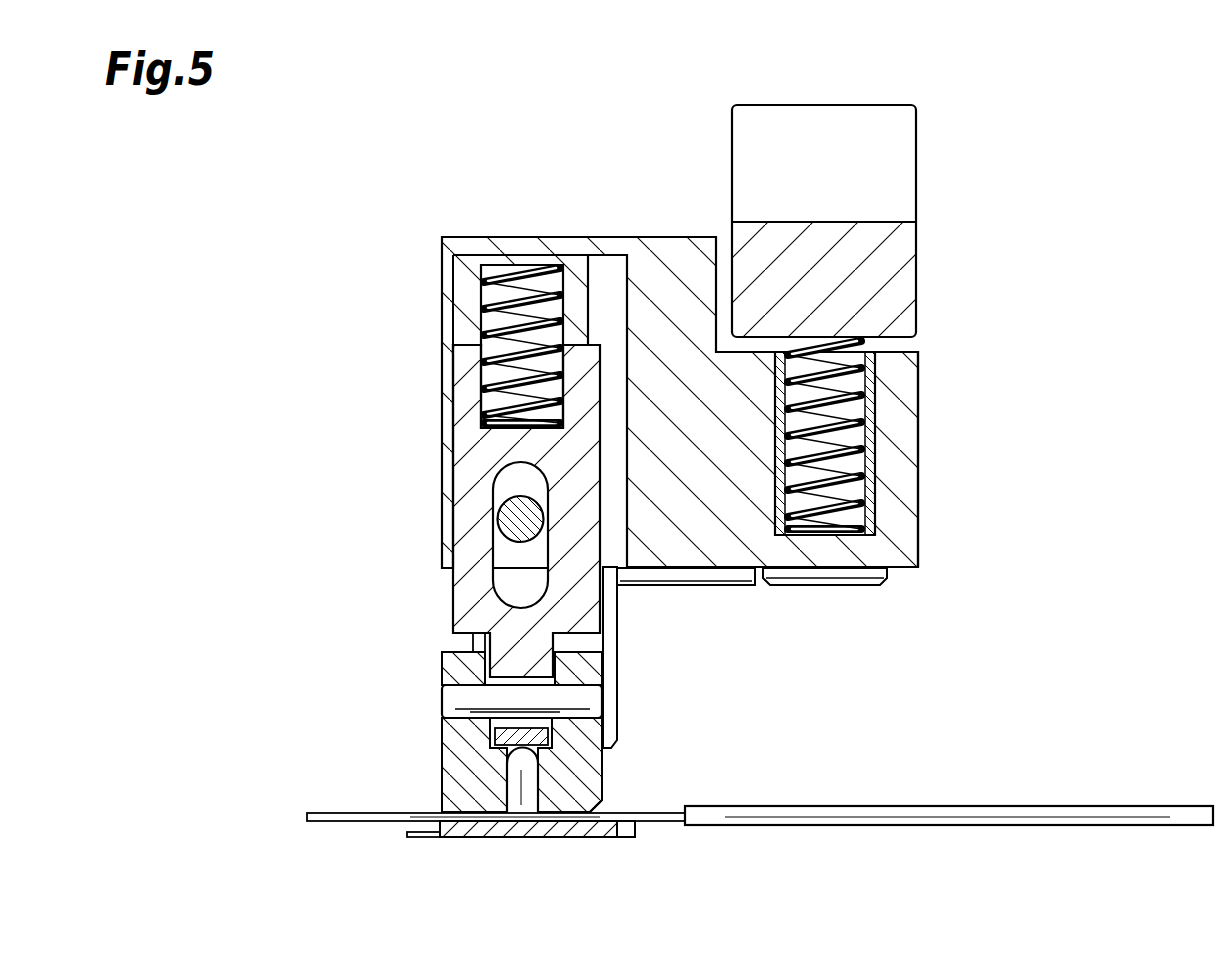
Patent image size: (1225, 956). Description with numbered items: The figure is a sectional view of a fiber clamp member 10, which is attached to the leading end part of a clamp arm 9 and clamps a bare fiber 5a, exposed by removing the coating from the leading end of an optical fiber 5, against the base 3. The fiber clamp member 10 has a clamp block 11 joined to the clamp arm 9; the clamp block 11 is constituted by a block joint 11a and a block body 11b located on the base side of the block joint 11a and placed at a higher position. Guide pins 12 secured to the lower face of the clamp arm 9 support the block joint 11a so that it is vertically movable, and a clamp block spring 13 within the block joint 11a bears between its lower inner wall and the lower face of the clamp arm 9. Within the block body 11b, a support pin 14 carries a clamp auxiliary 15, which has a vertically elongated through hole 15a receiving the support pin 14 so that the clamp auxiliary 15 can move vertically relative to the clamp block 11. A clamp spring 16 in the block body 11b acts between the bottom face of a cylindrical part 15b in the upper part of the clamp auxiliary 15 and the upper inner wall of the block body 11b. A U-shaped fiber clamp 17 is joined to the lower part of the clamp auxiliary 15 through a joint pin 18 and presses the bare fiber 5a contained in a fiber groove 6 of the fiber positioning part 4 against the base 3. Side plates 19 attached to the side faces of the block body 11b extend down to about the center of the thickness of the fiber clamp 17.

The fiber clamp member 10 is at (430, 256).
The clamp block 11 is at (652, 233).
The block joint 11a is at (902, 472).
The block body 11b is at (642, 258).
The clamp arm 9 is at (885, 183).
The guide pin 12 is at (827, 572).
The clamp block spring 13 is at (850, 500).
The support pin 14 is at (497, 520).
The clamp auxiliary 15 is at (465, 472).
The through hole 15a is at (513, 598).
The cylindrical part 15b is at (465, 388).
The clamp spring 16 is at (522, 275).
The fiber clamp 17 is at (450, 780).
The joint pin 18 is at (588, 700).
The side plate 19 is at (607, 640).
The fiber positioning part 4 is at (523, 827).
The base 3 is at (523, 827).
The optical fiber 5 is at (998, 812).
The bare fiber 5a is at (365, 818).
The fiber groove 6 is at (613, 812).